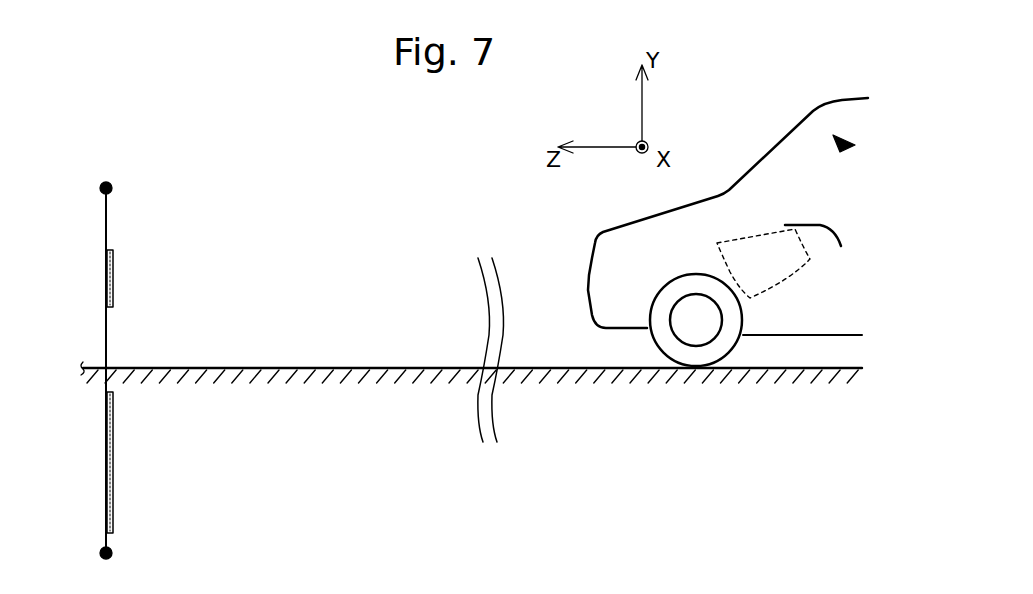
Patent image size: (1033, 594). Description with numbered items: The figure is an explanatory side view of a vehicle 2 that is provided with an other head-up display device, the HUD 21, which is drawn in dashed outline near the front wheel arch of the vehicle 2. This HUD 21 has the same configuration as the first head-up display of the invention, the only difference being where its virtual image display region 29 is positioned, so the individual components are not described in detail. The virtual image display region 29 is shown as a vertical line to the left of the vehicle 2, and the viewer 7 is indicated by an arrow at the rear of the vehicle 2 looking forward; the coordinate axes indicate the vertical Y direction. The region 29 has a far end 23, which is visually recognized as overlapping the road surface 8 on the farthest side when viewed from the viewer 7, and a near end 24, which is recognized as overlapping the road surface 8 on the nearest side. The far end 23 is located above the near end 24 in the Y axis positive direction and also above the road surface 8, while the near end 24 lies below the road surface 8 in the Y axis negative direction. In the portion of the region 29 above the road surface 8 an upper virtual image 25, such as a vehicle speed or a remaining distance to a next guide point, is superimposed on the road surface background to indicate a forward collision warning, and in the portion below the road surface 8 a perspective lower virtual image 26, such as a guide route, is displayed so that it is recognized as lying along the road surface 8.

The vehicle 2 is at (590, 284).
The viewer 7 is at (852, 145).
The road surface 8 is at (437, 368).
The HUD 21 is at (812, 262).
The far end 23 is at (110, 193).
The near end 24 is at (111, 551).
The upper virtual image 25 is at (113, 277).
The lower virtual image 26 is at (113, 448).
The virtual image display region 29 is at (110, 353).